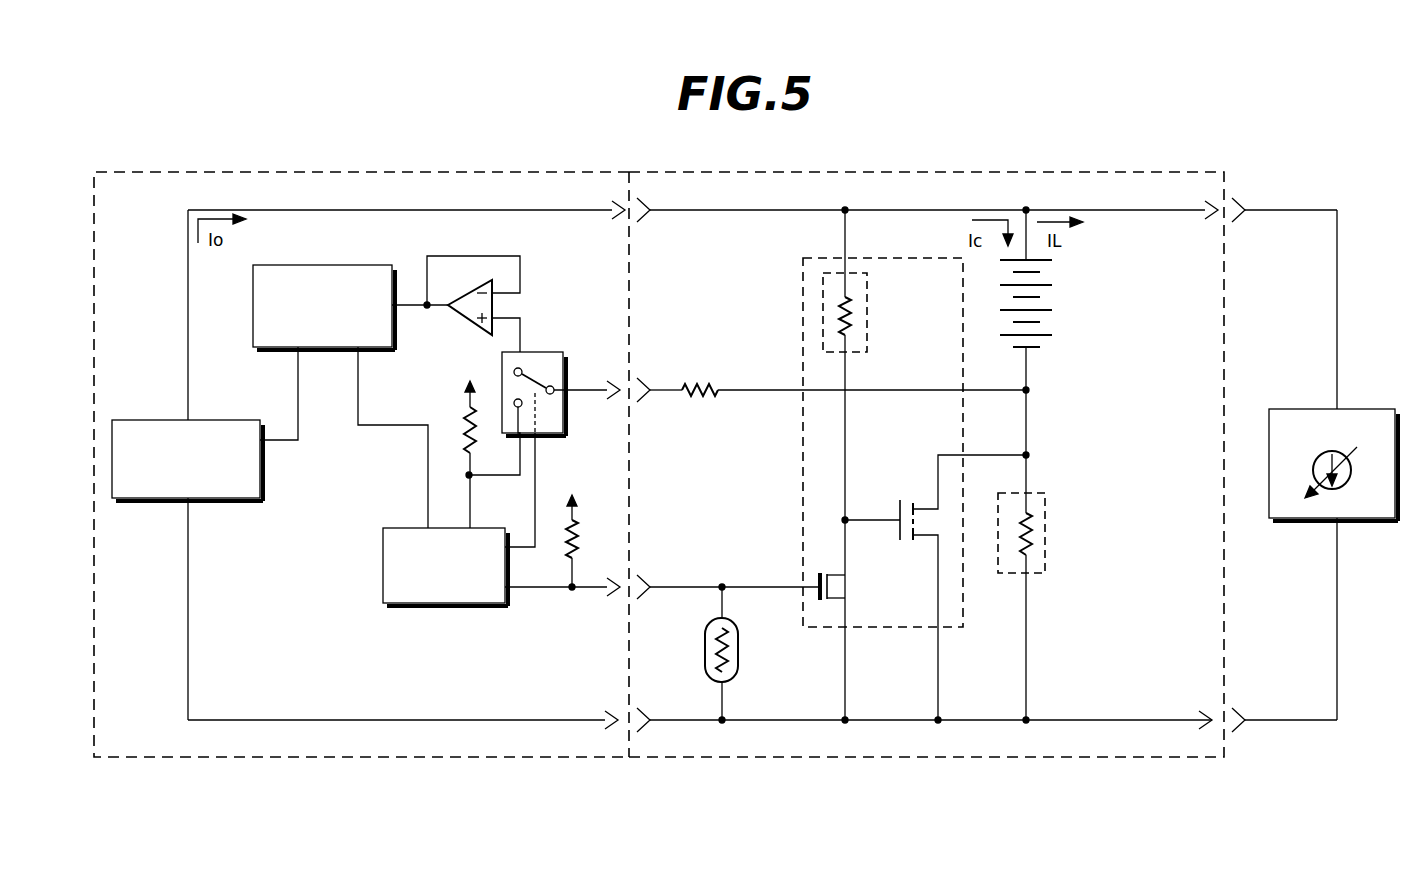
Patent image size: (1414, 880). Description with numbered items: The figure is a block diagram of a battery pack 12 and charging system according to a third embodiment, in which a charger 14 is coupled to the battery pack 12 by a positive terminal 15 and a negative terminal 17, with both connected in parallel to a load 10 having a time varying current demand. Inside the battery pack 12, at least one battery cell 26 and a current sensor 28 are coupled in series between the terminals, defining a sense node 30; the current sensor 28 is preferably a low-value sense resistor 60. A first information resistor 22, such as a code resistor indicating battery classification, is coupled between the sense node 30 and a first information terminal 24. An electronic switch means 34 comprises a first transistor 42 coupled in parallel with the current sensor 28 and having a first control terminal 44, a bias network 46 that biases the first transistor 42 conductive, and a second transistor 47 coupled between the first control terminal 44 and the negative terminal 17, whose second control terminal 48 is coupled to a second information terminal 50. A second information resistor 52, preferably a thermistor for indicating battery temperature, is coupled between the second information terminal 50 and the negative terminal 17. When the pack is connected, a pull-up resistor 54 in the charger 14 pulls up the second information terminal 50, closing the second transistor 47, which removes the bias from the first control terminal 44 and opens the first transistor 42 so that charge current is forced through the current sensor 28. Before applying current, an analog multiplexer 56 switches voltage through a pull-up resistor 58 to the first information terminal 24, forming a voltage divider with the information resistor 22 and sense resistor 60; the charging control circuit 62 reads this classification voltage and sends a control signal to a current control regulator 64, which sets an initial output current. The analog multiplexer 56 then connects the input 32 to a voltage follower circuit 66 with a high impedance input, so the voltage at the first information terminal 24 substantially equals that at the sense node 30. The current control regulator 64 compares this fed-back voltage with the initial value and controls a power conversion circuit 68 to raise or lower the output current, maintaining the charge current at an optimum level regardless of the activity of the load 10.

The load 10 is at (1375, 406).
The battery pack 12 is at (1115, 172).
The charger 14 is at (298, 170).
The positive terminal 15 is at (624, 200).
The negative terminal 17 is at (615, 732).
The information resistor 22 is at (712, 381).
The information terminal 24 is at (639, 384).
The battery cell 26 is at (1058, 291).
The current sensor 28 is at (1045, 527).
The sense node 30 is at (1028, 423).
The input 32 is at (567, 386).
The electronic switch means 34 is at (803, 483).
The first transistor 42 is at (935, 486).
The first control terminal 44 is at (898, 517).
The bias network 46 is at (867, 324).
The second transistor 47 is at (840, 585).
The second control terminal 48 is at (767, 586).
The second information terminal 50 is at (640, 578).
The second information resistor 52 is at (705, 647).
The pull-up resistor 54 is at (582, 541).
The analog multiplexer 56 is at (545, 351).
The pull-up resistor 58 is at (482, 430).
The sense resistor 60 is at (1031, 543).
The charging control circuit 62 is at (430, 606).
The current control regulator 64 is at (262, 350).
The voltage follower circuit 66 is at (517, 303).
The power conversion circuit 68 is at (208, 500).